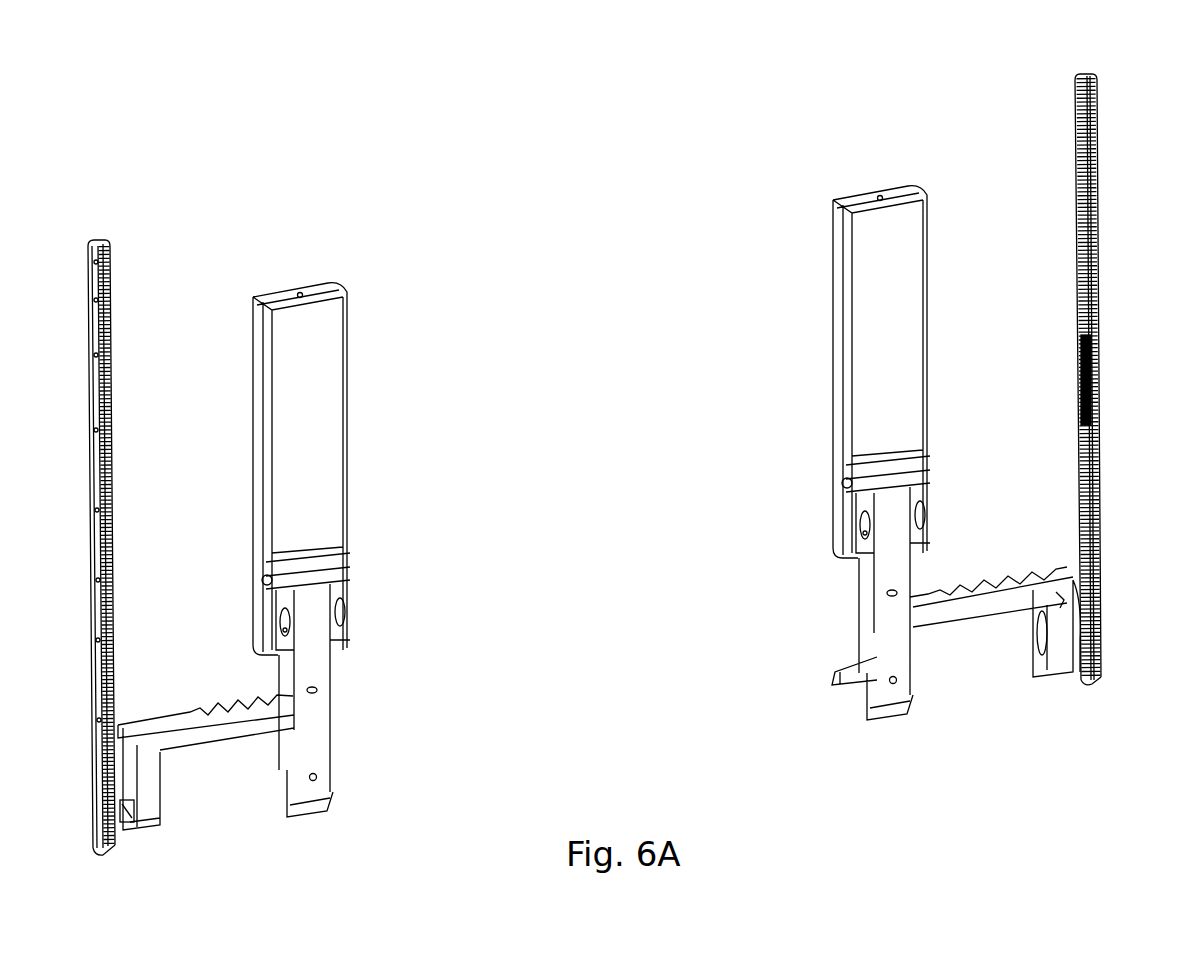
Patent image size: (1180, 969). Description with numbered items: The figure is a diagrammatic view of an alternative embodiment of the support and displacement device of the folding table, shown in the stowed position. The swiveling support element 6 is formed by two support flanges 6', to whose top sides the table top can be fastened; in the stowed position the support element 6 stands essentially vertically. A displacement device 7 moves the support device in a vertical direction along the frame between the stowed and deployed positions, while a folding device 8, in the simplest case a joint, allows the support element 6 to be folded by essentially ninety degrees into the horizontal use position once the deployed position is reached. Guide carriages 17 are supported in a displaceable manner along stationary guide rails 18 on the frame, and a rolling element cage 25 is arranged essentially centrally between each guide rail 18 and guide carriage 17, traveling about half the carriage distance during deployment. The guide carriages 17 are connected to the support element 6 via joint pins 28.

The support element 6 is at (366, 523).
The support flanges 6' is at (601, 350).
The displacement device 7 is at (1066, 552).
The folding device 8 is at (127, 800).
The guide carriages 17 is at (117, 767).
The guide rails 18 is at (103, 468).
The rolling element cage 25 is at (1083, 400).
The joint pins 28 is at (1062, 600).